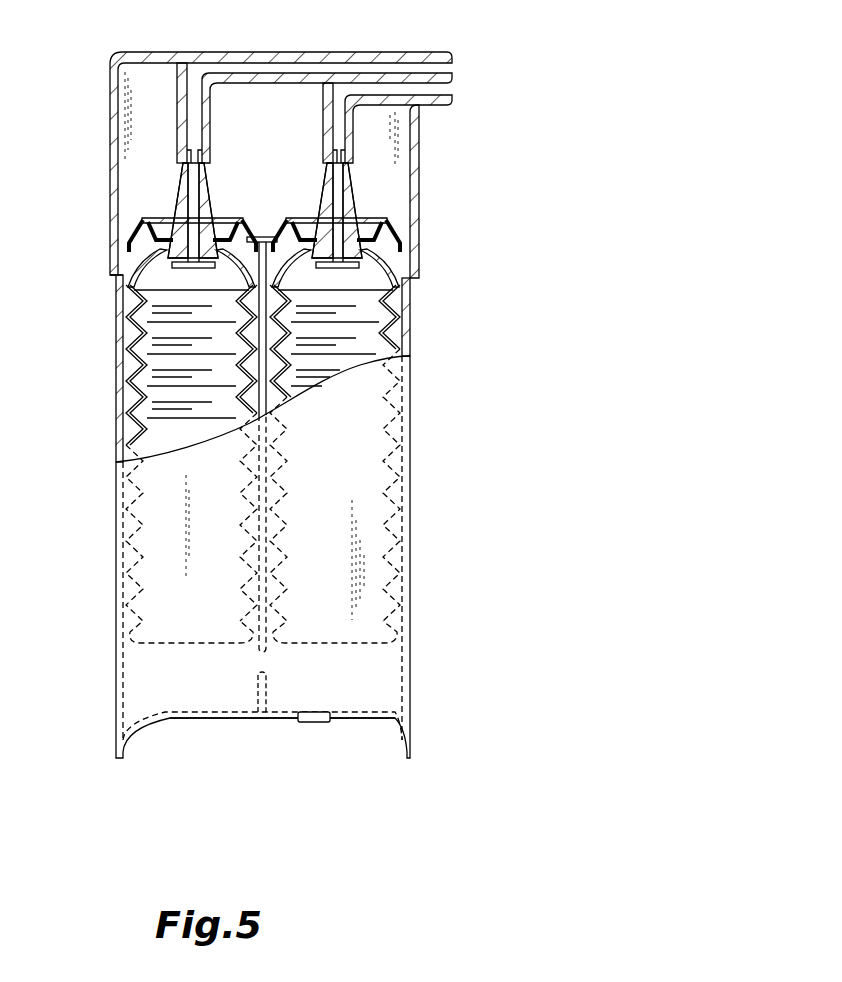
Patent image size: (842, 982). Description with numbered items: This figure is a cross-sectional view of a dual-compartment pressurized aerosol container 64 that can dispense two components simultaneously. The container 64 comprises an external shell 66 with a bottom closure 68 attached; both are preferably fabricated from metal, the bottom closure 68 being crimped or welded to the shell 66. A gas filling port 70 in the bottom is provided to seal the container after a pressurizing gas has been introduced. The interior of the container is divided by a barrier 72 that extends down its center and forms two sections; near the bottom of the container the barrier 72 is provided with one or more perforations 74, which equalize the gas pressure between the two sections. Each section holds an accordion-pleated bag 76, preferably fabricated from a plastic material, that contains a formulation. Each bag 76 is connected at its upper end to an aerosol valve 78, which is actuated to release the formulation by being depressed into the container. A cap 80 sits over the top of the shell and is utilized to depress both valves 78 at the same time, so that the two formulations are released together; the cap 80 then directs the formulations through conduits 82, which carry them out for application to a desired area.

The container 64 is at (288, 398).
The external shell 66 is at (410, 700).
The bottom closure 68 is at (226, 723).
The gas filling port 70 is at (320, 725).
The barrier 72 is at (284, 405).
The perforations 74 is at (282, 664).
The accordion-pleated bag 76 is at (142, 338).
The aerosol valve 78 is at (143, 251).
The cap 80 is at (110, 150).
The conduits 82 is at (452, 58).